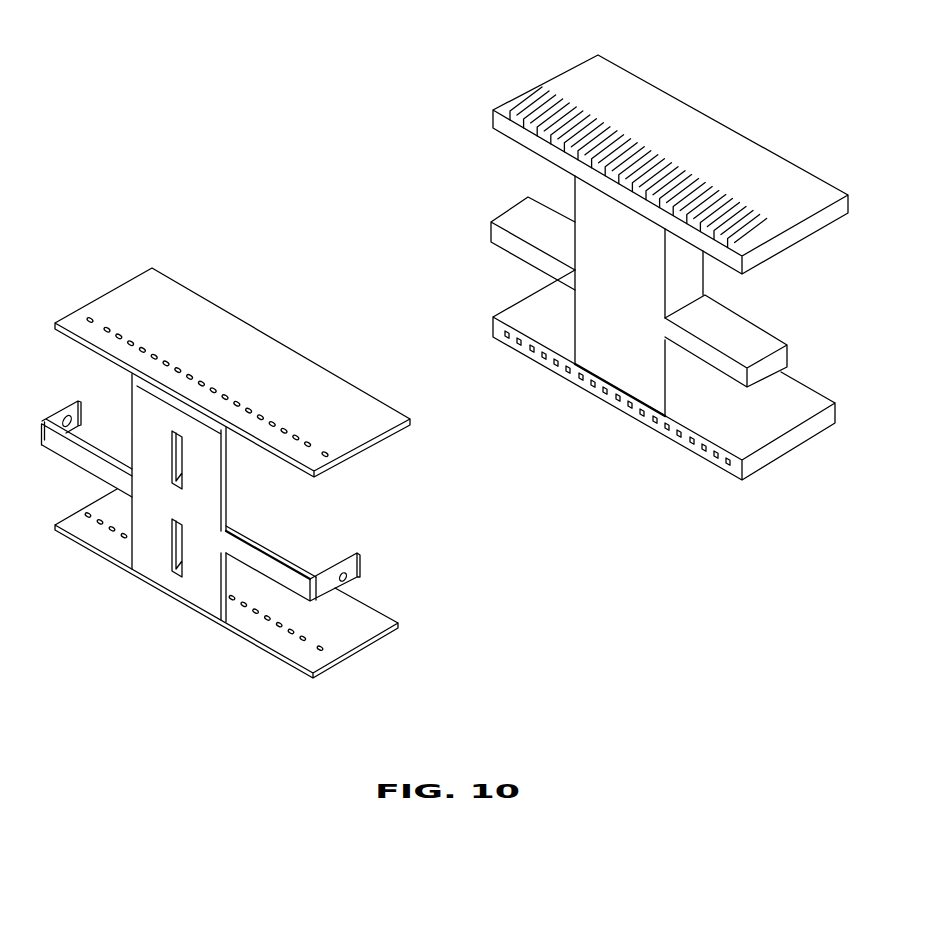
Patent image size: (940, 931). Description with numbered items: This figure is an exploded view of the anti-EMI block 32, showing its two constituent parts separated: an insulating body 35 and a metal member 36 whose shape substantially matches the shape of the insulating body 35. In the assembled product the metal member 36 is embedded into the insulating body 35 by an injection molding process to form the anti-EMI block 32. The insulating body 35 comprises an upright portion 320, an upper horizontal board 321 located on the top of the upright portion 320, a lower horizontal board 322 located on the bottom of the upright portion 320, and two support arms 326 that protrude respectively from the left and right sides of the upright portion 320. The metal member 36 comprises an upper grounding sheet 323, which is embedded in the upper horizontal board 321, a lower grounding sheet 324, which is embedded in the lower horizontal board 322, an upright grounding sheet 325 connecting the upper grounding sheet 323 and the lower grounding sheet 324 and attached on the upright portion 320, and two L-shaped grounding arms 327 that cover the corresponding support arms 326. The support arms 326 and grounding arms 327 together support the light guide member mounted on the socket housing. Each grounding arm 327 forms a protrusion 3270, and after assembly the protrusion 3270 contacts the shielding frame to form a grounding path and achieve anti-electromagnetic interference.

The anti-EMI block 32 is at (240, 128).
The insulating body 35 is at (588, 74).
The metal member 36 is at (126, 296).
The upright portion 320 is at (678, 292).
The upper horizontal board 321 is at (665, 118).
The lower horizontal board 322 is at (763, 405).
The upper grounding sheet 323 is at (258, 358).
The lower grounding sheet 324 is at (352, 620).
The upright grounding sheet 325 is at (208, 510).
The support arm 326 is at (748, 348).
The L-shaped grounding arm 327 is at (285, 575).
The protrusion 3270 is at (347, 576).